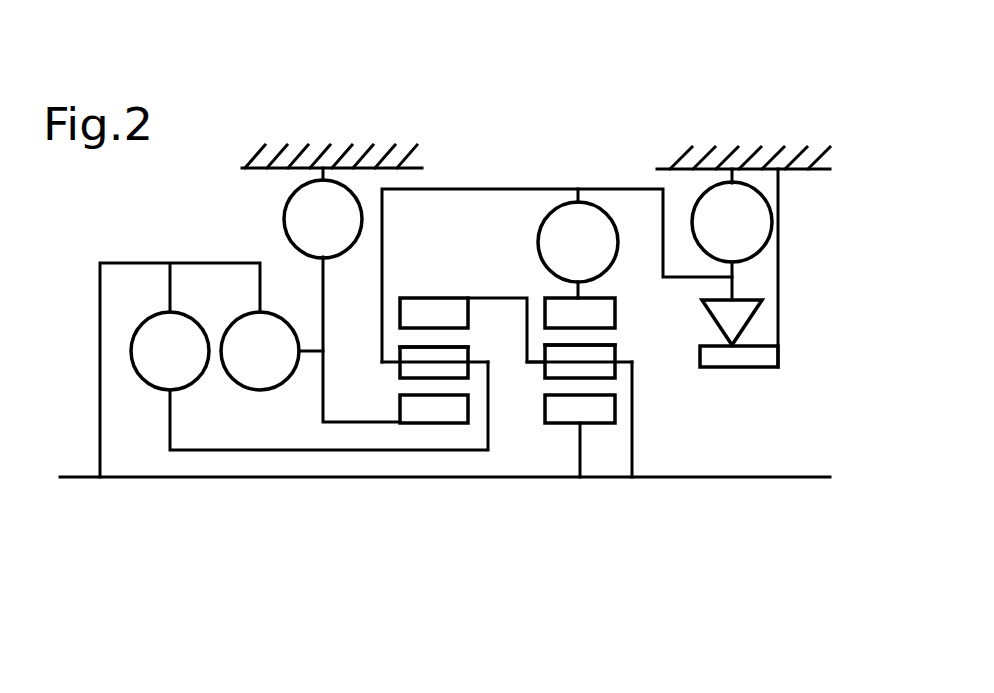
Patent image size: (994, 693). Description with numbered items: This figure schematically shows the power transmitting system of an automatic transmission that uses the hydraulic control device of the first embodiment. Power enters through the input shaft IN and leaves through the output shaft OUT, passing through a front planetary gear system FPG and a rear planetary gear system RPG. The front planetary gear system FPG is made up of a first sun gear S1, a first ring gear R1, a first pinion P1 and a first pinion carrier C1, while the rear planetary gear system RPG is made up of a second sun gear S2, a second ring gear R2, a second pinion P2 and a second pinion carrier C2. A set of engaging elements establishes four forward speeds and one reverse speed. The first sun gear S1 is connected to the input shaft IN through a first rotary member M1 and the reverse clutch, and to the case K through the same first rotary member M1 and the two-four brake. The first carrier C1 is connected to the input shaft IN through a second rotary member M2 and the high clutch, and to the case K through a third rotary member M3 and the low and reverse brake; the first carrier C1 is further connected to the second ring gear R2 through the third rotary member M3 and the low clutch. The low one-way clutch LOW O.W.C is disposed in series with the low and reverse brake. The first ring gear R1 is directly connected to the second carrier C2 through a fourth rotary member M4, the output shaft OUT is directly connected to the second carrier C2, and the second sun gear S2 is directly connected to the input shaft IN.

The input shaft IN is at (445, 370).
The output shaft OUT is at (730, 420).
The case K is at (422, 169).
The low one-way clutch LOW O.W.C is at (776, 271).
The first rotary member M1 is at (361, 340).
The second rotary member M2 is at (329, 406).
The third rotary member M3 is at (557, 275).
The fourth rotary member M4 is at (506, 313).
The first ring gear R1 is at (434, 314).
The first pinion carrier C1 is at (489, 362).
The first pinion P1 is at (457, 347).
The first sun gear S1 is at (434, 410).
The front planetary gear system FPG is at (435, 492).
The second ring gear R2 is at (580, 314).
The second pinion carrier C2 is at (633, 362).
The second pinion P2 is at (608, 346).
The second sun gear S2 is at (580, 436).
The rear planetary gear system RPG is at (573, 492).